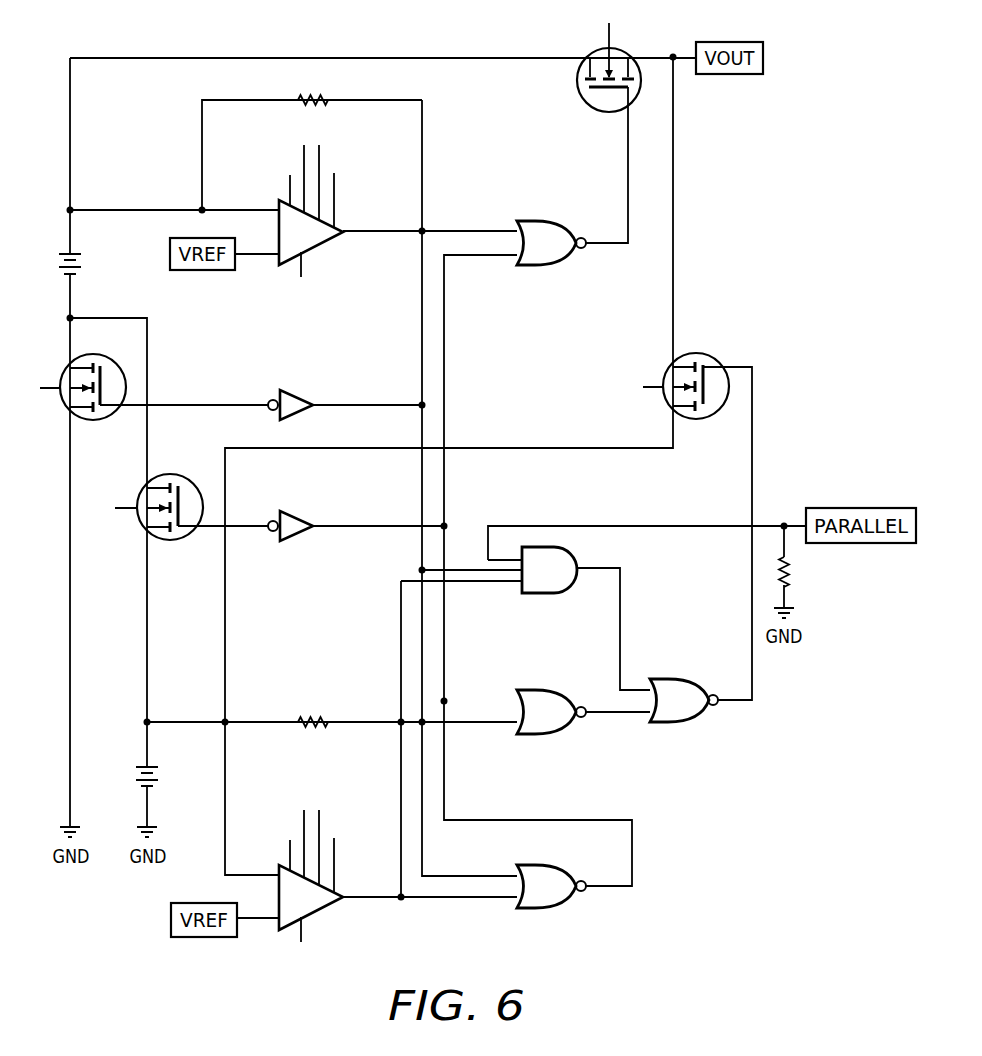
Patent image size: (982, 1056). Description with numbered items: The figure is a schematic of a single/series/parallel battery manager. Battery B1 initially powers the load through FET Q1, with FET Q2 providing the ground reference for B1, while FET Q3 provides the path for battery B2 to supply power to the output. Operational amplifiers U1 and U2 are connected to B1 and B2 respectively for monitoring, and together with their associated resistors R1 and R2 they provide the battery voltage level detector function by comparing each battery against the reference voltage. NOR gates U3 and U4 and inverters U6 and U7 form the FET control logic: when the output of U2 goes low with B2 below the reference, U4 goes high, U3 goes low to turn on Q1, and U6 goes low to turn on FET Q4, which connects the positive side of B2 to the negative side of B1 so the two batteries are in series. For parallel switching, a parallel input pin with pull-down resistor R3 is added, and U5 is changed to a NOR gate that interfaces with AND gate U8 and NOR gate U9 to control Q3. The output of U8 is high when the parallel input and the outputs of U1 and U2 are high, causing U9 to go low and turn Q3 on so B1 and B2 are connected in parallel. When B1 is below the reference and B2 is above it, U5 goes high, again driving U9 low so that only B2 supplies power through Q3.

The FET Q1 is at (577, 79).
The FET Q2 is at (98, 420).
The FET Q3 is at (702, 419).
The FET Q4 is at (180, 474).
The operational amplifier U1 is at (328, 243).
The operational amplifier U2 is at (328, 908).
The NOR gate U3 is at (537, 221).
The NOR gate U4 is at (540, 908).
The NOR gate U5 is at (540, 734).
The inverter U6 is at (284, 514).
The inverter U7 is at (284, 394).
The AND gate U8 is at (540, 593).
The NOR gate U9 is at (668, 679).
The resistor R1 is at (313, 103).
The resistor R2 is at (313, 724).
The pull-down resistor R3 is at (798, 572).
The battery B1 is at (85, 268).
The battery B2 is at (163, 782).